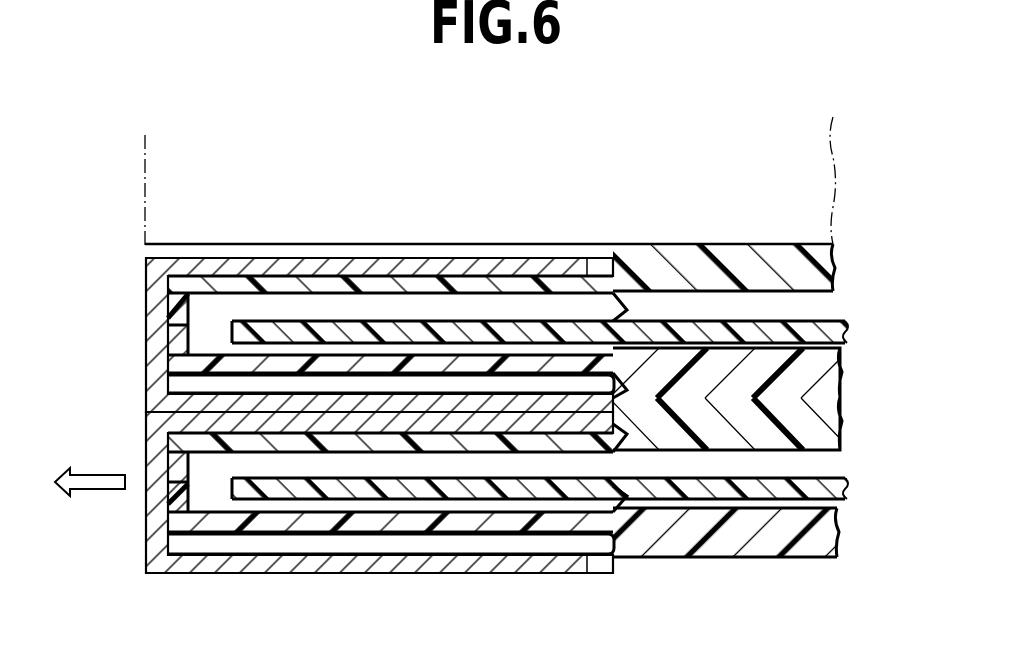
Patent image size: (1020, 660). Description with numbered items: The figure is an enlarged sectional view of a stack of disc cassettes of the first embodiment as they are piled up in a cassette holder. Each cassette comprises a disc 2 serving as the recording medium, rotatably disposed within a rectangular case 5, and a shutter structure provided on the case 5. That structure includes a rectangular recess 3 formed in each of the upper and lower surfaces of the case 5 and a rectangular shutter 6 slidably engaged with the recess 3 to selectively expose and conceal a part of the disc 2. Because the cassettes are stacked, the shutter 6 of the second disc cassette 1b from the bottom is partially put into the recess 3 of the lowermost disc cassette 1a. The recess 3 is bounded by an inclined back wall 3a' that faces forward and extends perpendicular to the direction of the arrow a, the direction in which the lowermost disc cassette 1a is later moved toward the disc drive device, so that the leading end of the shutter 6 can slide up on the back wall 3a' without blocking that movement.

The lowermost disc cassette 1a is at (143, 526).
The second disc cassette 1b is at (145, 282).
The disc 2 is at (755, 326).
The rectangular recess 3 is at (556, 376).
The back wall 3a' is at (706, 392).
The case 5 is at (838, 250).
The shutter 6 is at (482, 394).
The arrow a is at (90, 467).